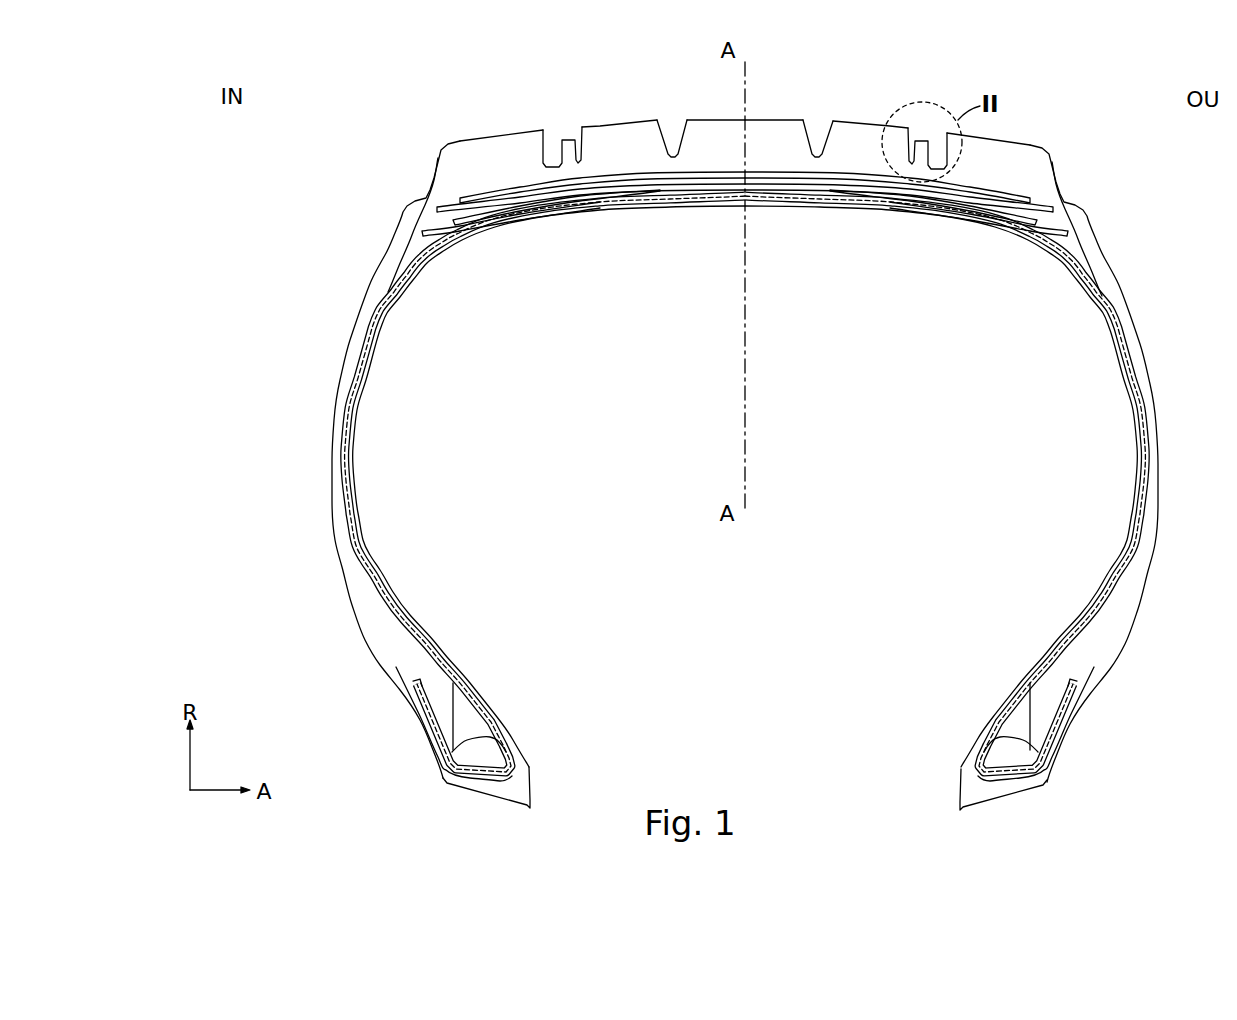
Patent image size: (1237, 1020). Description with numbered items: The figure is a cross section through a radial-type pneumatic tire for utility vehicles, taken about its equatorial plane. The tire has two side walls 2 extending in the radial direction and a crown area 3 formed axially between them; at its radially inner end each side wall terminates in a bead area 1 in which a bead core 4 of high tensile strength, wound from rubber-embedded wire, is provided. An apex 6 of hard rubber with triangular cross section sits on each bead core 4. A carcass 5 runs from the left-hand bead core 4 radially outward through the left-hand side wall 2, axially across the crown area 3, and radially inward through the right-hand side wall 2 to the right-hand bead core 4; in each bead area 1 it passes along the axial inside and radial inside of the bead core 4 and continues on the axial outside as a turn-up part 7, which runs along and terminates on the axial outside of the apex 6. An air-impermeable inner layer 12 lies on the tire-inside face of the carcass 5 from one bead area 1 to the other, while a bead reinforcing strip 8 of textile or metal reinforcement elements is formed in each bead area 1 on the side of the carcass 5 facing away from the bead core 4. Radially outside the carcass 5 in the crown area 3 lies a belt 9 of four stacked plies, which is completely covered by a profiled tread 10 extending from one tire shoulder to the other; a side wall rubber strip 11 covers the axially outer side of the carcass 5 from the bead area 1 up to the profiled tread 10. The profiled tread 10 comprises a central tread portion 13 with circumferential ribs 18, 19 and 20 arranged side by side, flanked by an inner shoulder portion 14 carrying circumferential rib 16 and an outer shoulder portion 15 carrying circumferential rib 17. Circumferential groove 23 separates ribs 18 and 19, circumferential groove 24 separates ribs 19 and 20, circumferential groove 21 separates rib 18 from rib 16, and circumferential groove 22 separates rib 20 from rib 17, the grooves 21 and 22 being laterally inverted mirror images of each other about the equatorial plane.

The bead area 1 is at (1080, 747).
The side wall 2 is at (1160, 412).
The crown area 3 is at (790, 118).
The bead core 4 is at (510, 765).
The carcass 5 is at (1143, 507).
The apex 6 is at (467, 707).
The turn-up part 7 is at (415, 684).
The bead reinforcing strip 8 is at (437, 733).
The belt 9 is at (760, 167).
The profiled tread 10 is at (878, 122).
The side wall rubber strip 11 is at (1127, 323).
The inner layer 12 is at (1127, 380).
The central tread portion 13 is at (738, 148).
The shoulder portion 14 is at (478, 126).
The shoulder portion 15 is at (1034, 132).
The circumferential rib 16 is at (487, 178).
The circumferential rib 17 is at (1025, 185).
The circumferential rib 18 is at (604, 162).
The circumferential rib 19 is at (782, 147).
The circumferential rib 20 is at (862, 160).
The circumferential groove 21 is at (567, 118).
The circumferential groove 22 is at (932, 122).
The circumferential groove 23 is at (672, 110).
The circumferential groove 24 is at (818, 118).